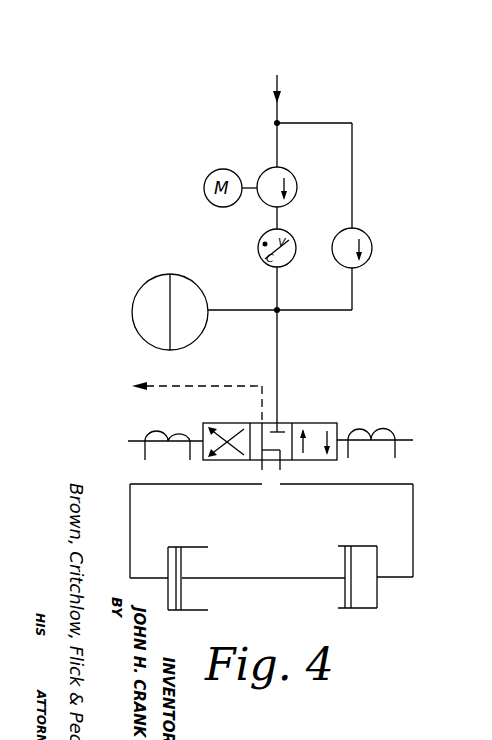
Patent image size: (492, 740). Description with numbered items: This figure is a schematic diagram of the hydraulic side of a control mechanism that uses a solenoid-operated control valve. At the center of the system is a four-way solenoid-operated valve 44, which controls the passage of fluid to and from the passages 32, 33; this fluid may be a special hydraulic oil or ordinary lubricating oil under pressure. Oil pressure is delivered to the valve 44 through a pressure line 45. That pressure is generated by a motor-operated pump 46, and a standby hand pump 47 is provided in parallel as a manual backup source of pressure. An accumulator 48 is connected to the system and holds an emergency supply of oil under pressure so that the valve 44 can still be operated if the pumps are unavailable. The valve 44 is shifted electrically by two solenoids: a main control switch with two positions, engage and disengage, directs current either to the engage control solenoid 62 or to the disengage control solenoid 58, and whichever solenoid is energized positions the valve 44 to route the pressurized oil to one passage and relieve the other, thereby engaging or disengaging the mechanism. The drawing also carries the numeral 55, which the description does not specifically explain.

The passage 32 is at (413, 507).
The passage 33 is at (129, 489).
The 4-way solenoid-operated valve 44 is at (312, 422).
The pressure line 45 is at (278, 362).
The motor-operated pump 46 is at (296, 177).
The standby hand pump 47 is at (366, 262).
The accumulator 48 is at (143, 337).
The line 55 is at (482, 156).
The disengage control solenoid 58 is at (167, 430).
The engage control solenoid 62 is at (377, 427).